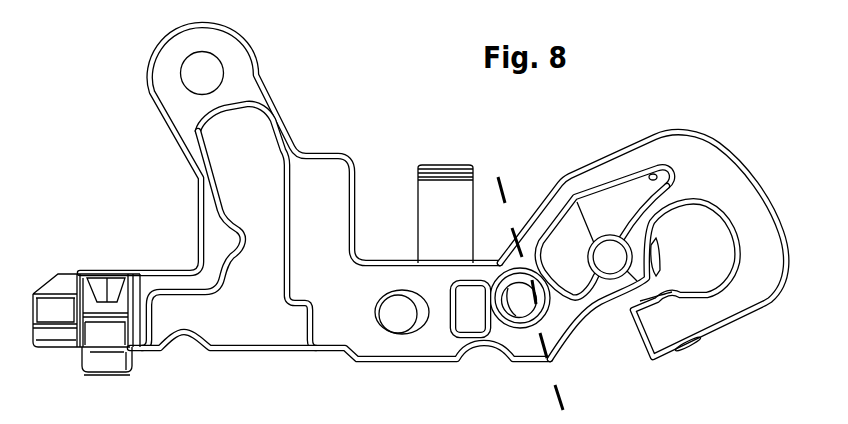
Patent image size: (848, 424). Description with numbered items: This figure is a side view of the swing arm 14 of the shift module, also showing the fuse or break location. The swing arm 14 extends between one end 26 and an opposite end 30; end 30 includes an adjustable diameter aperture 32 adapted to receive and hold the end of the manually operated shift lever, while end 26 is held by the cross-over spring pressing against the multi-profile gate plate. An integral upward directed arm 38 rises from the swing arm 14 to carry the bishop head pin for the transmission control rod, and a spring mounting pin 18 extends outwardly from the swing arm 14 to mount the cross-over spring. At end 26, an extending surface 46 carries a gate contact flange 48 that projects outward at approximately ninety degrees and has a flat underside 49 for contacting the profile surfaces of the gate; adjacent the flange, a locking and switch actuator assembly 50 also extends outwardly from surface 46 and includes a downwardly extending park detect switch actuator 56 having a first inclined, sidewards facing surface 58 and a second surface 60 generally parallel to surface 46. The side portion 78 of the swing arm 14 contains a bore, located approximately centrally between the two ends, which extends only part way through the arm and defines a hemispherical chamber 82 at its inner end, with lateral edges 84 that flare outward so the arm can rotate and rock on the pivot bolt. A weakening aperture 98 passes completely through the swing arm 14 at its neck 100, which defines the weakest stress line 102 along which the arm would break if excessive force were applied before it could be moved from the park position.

The swing arm 14 is at (585, 164).
The spring mounting pin 18 is at (417, 207).
The end of swing arm 26 is at (38, 268).
The end of swing arm 30 is at (703, 140).
The adjustable diameter aperture 32 is at (715, 223).
The upward directed arm 38 is at (265, 87).
The extending surface 46 is at (58, 285).
The gate contact flange 48 is at (31, 315).
The flat underside 49 is at (64, 313).
The locking and switch actuator assembly 50 is at (120, 259).
The park detect switch actuator 56 is at (133, 355).
The first inclined, sidewards facing surface 58 is at (97, 365).
The second surface 60 is at (115, 364).
The side portion 78 is at (335, 325).
The hemispherical chamber 82 is at (400, 320).
The lateral edges 84 is at (383, 332).
The weakening aperture 98 is at (518, 334).
The neck 100 is at (497, 255).
The stress line 102 is at (568, 390).